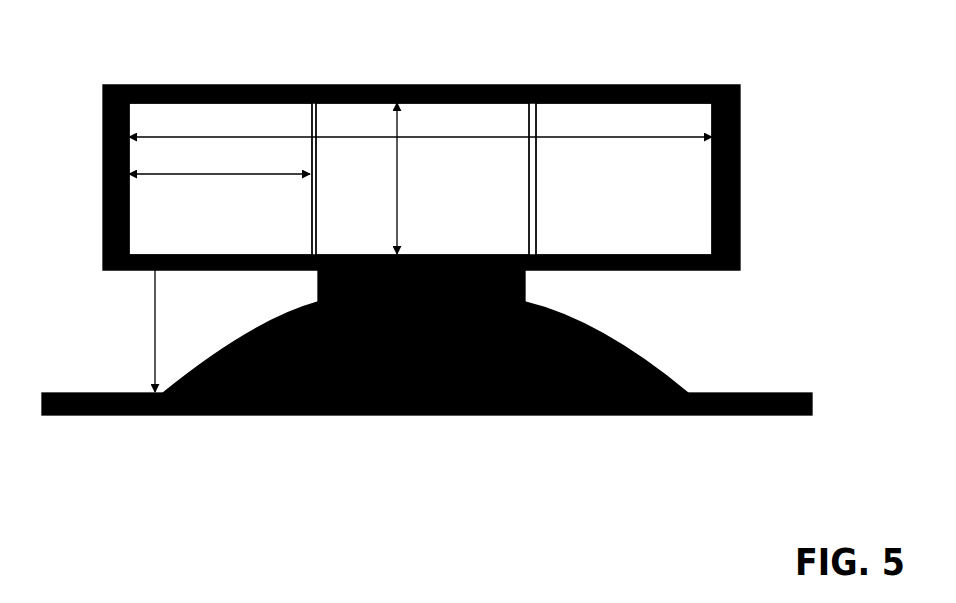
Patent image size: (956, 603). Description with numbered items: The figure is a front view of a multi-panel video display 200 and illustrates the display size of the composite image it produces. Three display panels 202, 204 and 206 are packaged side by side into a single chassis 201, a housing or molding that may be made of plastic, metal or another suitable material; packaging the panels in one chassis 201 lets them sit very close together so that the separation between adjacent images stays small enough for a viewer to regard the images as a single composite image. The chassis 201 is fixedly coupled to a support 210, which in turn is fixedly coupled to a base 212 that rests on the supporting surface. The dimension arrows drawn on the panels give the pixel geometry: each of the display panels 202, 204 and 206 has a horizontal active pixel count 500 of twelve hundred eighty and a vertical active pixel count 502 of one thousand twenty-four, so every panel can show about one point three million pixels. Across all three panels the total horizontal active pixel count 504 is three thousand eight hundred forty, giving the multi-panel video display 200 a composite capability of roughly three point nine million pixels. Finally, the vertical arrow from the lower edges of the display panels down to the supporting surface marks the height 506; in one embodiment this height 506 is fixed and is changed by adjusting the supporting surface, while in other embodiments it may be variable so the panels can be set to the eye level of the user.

The multi-panel video display 200 is at (434, 219).
The chassis 201 is at (740, 187).
The display panel 202 is at (241, 85).
The display panel 204 is at (418, 85).
The display panel 206 is at (620, 85).
The support 210 is at (528, 290).
The base 212 is at (207, 360).
The horizontal active pixel count 500 is at (208, 177).
The vertical active pixel count 502 is at (403, 175).
The total horizontal active pixel count 504 is at (612, 139).
The height 506 is at (153, 321).